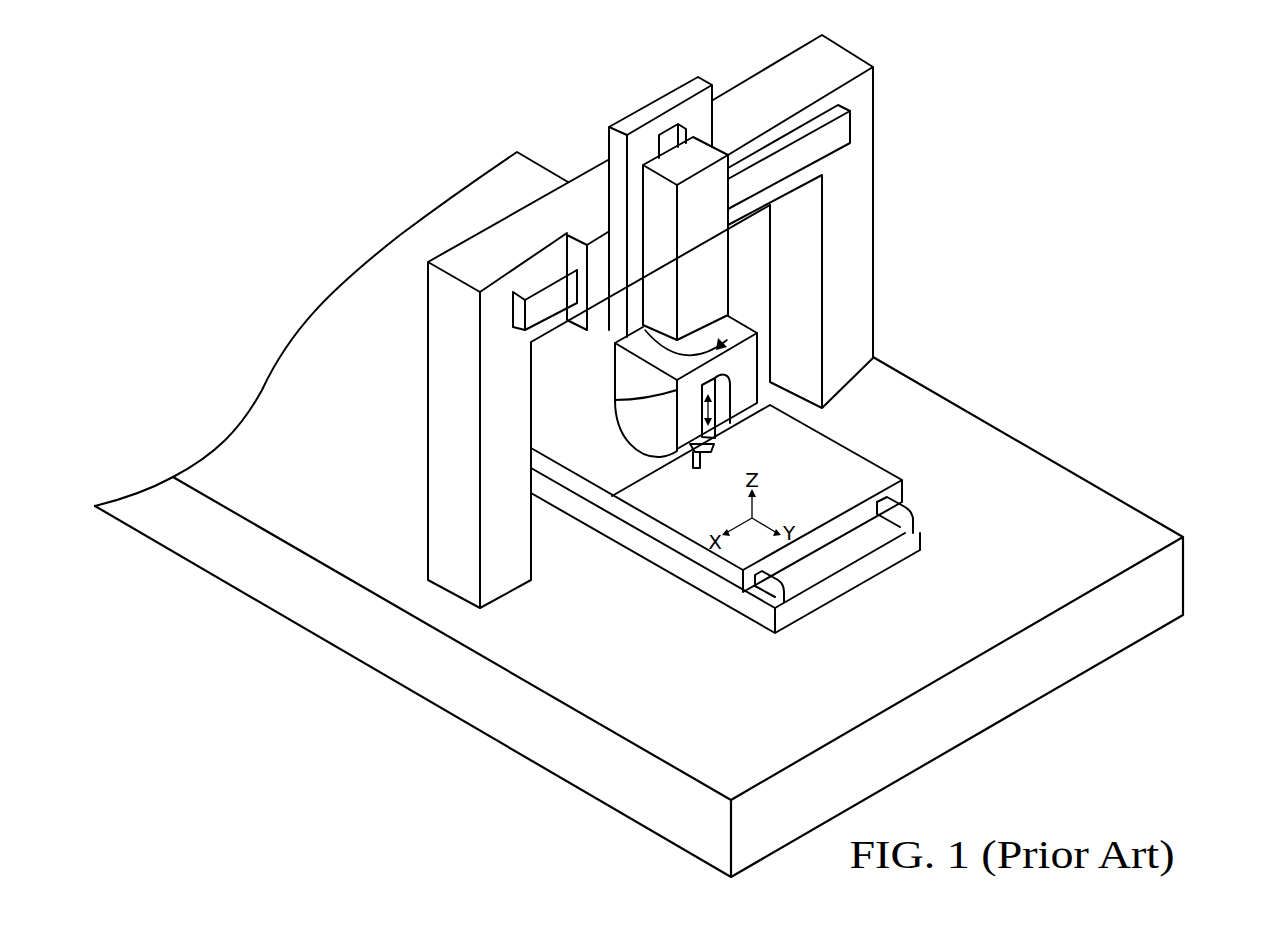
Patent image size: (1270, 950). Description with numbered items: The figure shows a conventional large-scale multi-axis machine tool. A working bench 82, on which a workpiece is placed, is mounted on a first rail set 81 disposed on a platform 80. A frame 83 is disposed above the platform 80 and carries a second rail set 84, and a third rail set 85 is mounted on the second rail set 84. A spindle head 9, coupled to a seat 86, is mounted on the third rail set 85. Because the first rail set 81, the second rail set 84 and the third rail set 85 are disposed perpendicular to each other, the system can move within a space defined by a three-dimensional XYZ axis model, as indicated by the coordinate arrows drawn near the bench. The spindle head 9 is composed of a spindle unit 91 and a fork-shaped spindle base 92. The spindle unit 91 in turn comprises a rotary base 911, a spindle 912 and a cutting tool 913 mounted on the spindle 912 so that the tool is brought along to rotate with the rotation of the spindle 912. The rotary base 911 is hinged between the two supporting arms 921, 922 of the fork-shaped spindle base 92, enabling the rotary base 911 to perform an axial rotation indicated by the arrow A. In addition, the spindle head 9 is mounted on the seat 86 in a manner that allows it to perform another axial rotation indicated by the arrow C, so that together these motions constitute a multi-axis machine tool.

The platform 80 is at (1102, 513).
The first rail set 81 is at (910, 508).
The working bench 82 is at (877, 477).
The frame 83 is at (863, 167).
The second rail set 84 is at (502, 217).
The third rail set 85 is at (680, 142).
The seat 86 is at (660, 228).
The spindle head 9 is at (646, 420).
The spindle unit 91 is at (750, 495).
The rotary base 911 is at (720, 440).
The spindle 912 is at (713, 457).
The cutting tool 913 is at (695, 465).
The fork-shaped spindle base 92 is at (646, 341).
The supporting arm 921 is at (602, 400).
The supporting arm 922 is at (752, 352).